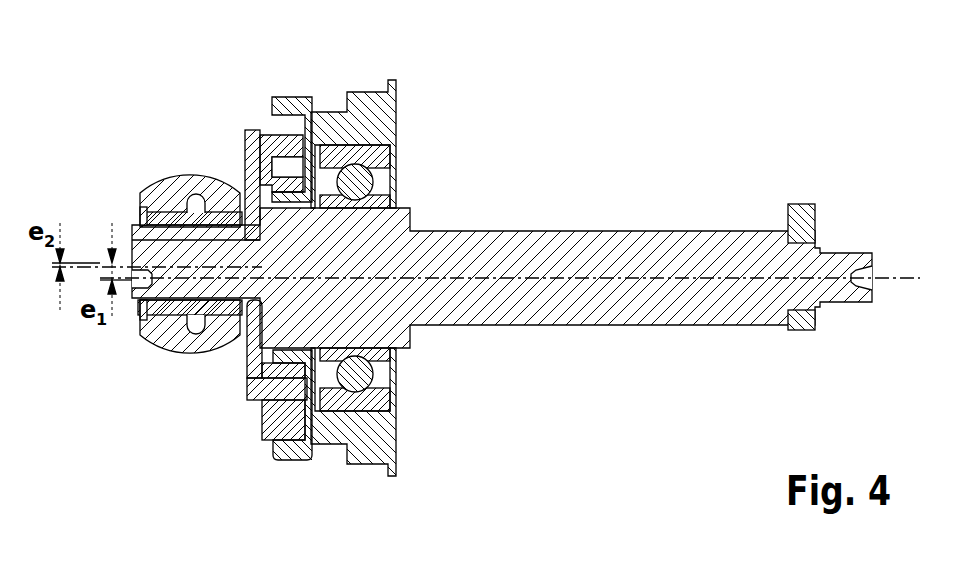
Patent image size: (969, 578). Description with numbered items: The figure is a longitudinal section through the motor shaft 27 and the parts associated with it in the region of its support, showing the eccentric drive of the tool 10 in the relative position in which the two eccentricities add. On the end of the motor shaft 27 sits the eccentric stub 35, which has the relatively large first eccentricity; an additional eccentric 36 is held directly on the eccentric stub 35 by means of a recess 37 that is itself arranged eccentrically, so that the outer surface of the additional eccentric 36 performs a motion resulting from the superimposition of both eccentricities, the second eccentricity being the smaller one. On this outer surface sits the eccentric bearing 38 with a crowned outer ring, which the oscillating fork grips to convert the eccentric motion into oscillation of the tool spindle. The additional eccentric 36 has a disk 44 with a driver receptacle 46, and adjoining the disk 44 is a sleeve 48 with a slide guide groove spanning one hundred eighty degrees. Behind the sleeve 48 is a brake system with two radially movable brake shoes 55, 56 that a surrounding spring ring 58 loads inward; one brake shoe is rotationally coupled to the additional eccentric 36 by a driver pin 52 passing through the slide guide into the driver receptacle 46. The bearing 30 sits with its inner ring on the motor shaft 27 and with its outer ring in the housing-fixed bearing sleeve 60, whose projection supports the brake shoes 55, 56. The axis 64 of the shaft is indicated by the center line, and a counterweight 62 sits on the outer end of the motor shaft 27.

The drive unit / assembly 10 is at (688, 97).
The motor shaft 27 is at (685, 240).
The bearing 30 is at (380, 160).
The eccentric stub 35 is at (160, 352).
The additional eccentric 36 is at (251, 127).
The recess 37 is at (142, 214).
The eccentric bearing 38 is at (188, 180).
The disk 44 is at (243, 352).
The driver receptacle 46 is at (262, 390).
The sleeve 48 is at (274, 97).
The driver pin 52 is at (275, 440).
The brake shoe 55 is at (288, 414).
The brake shoe 56 is at (303, 110).
The spring ring 58 is at (288, 144).
The bearing sleeve 60 is at (392, 105).
The counterweight 62 is at (800, 204).
The shaft axis 64 is at (625, 272).